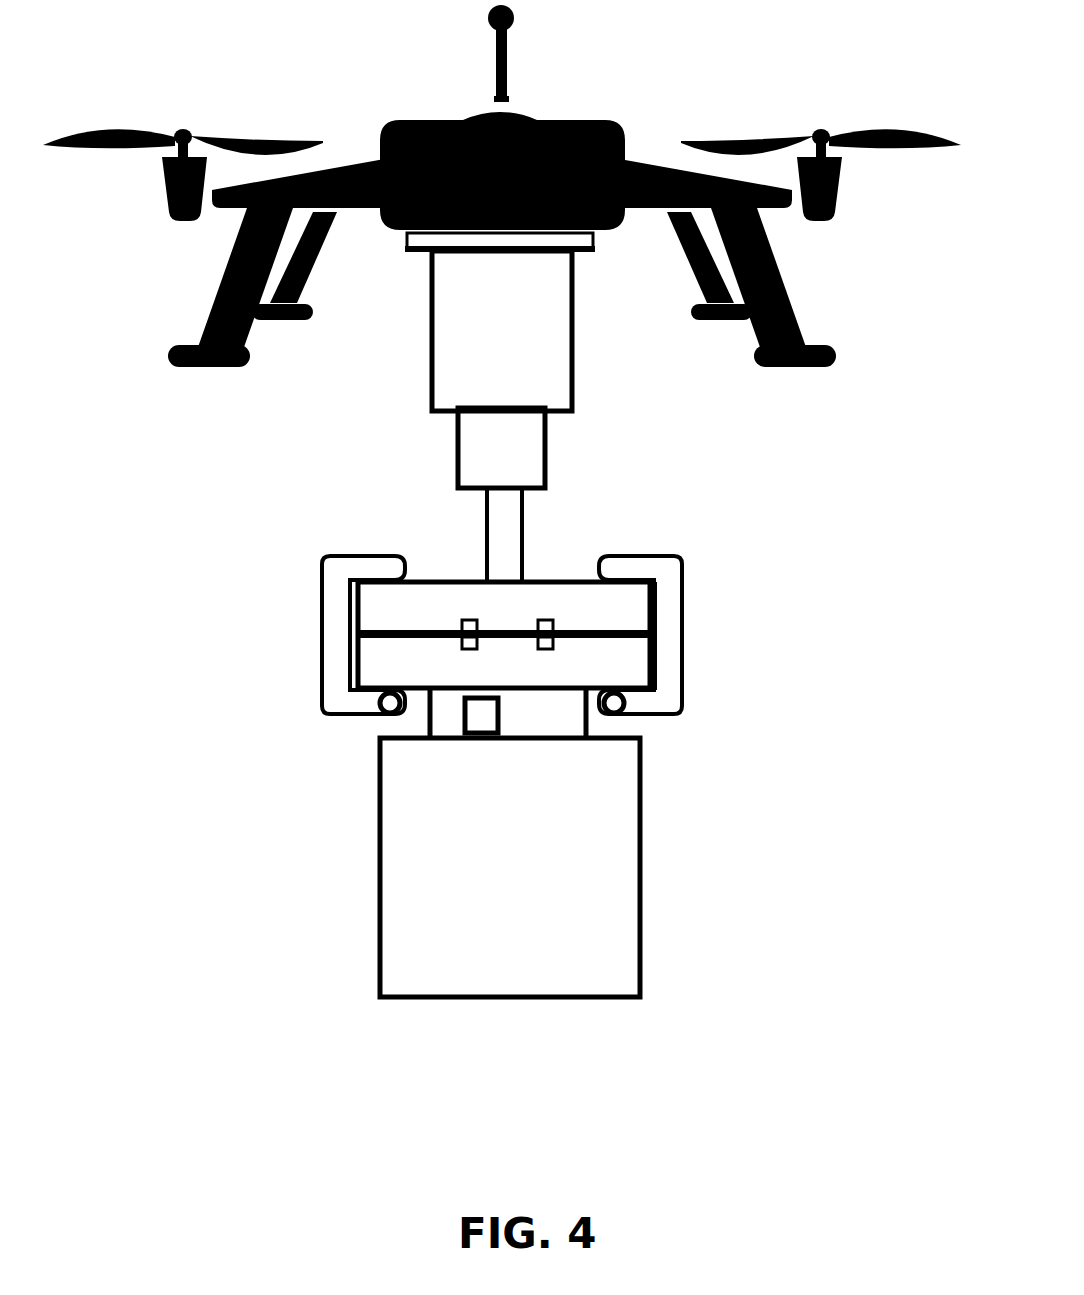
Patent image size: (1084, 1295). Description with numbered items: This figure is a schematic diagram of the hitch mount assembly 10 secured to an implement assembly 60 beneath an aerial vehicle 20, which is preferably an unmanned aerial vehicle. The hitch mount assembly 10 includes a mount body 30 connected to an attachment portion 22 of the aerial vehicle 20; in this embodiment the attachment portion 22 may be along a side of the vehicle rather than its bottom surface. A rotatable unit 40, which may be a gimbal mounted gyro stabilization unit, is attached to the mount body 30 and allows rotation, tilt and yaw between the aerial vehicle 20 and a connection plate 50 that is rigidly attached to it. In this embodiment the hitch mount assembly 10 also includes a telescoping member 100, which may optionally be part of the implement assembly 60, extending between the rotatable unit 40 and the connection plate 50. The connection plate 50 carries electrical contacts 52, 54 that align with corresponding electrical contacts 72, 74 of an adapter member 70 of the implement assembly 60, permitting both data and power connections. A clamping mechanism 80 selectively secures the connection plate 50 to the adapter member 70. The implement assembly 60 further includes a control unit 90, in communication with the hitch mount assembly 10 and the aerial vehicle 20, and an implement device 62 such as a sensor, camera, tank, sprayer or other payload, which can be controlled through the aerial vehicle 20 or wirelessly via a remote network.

The hitch mount assembly 10 is at (398, 473).
The aerial vehicle 20 is at (585, 130).
The attachment portion 22 is at (593, 252).
The mount body 30 is at (423, 243).
The rotatable unit 40 is at (573, 343).
The telescoping member 100 is at (527, 473).
The connection plate 50 is at (635, 608).
The electrical contact 52 is at (464, 620).
The electrical contact 54 is at (548, 620).
The adapter member 70 is at (630, 658).
The electrical contact 72 is at (470, 650).
The electrical contact 74 is at (545, 650).
The clamping mechanism 80 is at (672, 690).
The control unit 90 is at (478, 718).
The implement assembly 60 is at (386, 842).
The implement device 62 is at (380, 953).